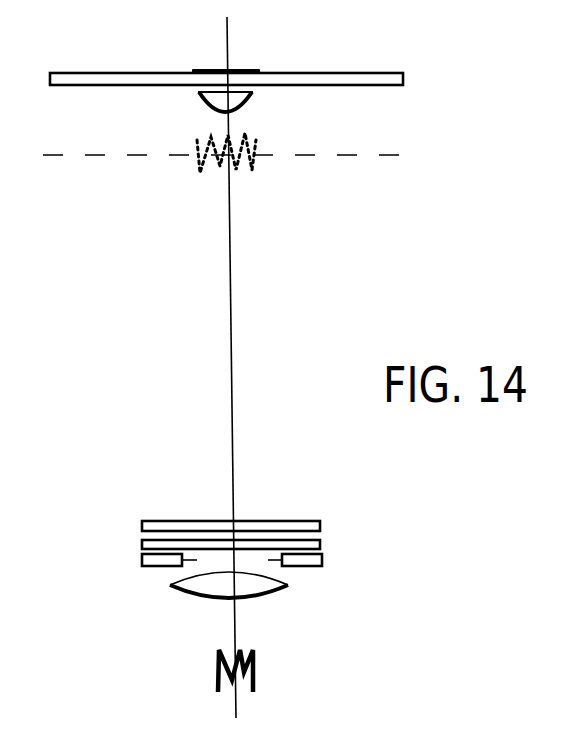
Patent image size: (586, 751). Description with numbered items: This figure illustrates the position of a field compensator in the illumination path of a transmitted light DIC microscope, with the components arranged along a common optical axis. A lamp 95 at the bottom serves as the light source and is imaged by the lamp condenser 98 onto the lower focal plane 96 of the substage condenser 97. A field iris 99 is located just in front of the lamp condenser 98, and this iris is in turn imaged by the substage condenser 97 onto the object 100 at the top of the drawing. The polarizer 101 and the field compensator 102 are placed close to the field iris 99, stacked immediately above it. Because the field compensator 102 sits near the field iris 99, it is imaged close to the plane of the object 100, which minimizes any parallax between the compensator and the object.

The lamp 95 is at (216, 671).
The lower focal plane 96 is at (209, 153).
The substage condenser 97 is at (200, 99).
The lamp condenser 98 is at (186, 596).
The field iris 99 is at (152, 567).
The object 100 is at (210, 69).
The polarizer 101 is at (142, 545).
The field compensator 102 is at (144, 521).